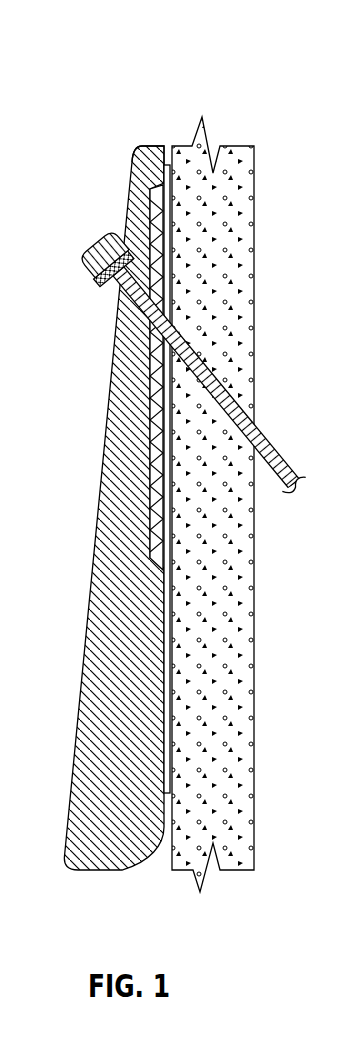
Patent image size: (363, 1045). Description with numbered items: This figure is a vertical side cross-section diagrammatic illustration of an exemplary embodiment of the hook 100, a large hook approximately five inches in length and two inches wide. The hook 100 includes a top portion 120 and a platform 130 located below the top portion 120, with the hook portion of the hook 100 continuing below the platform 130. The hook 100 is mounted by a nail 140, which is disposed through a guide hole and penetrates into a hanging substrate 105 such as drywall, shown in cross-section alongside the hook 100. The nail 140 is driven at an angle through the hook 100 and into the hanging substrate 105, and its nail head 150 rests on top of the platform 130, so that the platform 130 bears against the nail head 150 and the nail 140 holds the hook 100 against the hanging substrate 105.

The hook 100 is at (97, 873).
The hanging substrate 105 is at (245, 268).
The top portion 120 is at (150, 148).
The platform 130 is at (106, 300).
The nail 140 is at (122, 308).
The nail head 150 is at (92, 242).